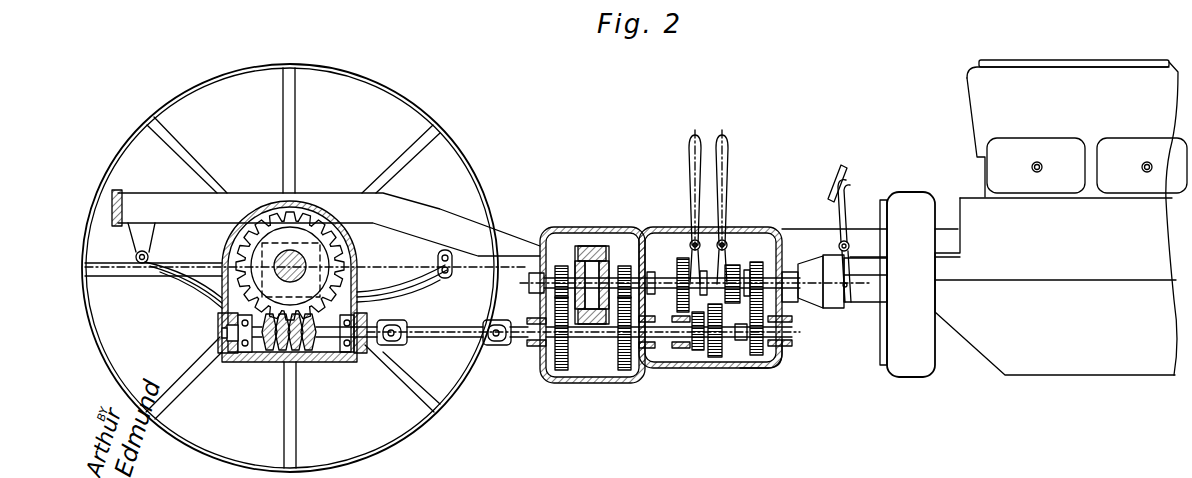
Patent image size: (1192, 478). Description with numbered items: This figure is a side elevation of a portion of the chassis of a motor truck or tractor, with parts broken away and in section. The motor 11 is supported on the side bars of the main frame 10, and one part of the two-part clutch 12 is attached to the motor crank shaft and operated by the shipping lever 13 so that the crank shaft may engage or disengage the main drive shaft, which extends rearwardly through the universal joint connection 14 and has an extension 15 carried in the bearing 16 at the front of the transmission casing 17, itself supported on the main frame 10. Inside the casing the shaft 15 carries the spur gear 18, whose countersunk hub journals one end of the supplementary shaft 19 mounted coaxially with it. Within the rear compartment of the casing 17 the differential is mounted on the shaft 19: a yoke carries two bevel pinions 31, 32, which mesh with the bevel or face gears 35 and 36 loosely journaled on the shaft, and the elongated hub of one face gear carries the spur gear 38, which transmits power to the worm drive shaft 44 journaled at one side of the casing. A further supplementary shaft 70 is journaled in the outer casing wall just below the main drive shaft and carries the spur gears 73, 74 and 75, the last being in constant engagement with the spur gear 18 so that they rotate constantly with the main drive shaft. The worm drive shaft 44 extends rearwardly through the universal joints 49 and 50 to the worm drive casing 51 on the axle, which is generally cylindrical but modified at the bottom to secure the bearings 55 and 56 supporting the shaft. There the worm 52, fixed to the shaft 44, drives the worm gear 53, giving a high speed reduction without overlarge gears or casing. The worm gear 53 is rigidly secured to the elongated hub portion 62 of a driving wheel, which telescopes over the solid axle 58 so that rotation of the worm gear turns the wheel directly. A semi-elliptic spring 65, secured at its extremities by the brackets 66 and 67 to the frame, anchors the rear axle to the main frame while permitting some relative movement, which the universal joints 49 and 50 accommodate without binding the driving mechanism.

The main frame 10 is at (115, 208).
The motor 11 is at (1005, 228).
The two-part clutch 12 is at (907, 284).
The shipping lever 13 is at (851, 183).
The universal joint connection 14 is at (836, 302).
The extension (main drive shaft) 15 is at (818, 296).
The bearing 16 is at (788, 300).
The transmission casing 17 is at (660, 230).
The spur gear 18 is at (758, 264).
The supplementary shaft 19 is at (670, 276).
The bevel pinion 31 is at (588, 249).
The bevel pinion 32 is at (600, 325).
The bevel or face gear 35 is at (566, 258).
The bevel or face gear 36 is at (612, 243).
The spur gear 38 is at (630, 263).
The worm drive shaft 44 is at (342, 343).
The universal joint 49 is at (402, 346).
The universal joint 50 is at (500, 347).
The worm drive casing 51 is at (223, 243).
The worm 52 is at (303, 353).
The worm gear 53 is at (297, 261).
The bearing 55 is at (247, 354).
The bearing 56 is at (366, 350).
The solid axle 58 is at (301, 209).
The elongated hub portion 62 is at (284, 254).
The semi-elliptic spring 65 is at (208, 301).
The bracket 66 is at (136, 236).
The bracket 67 is at (466, 262).
The supplementary shaft 70 is at (741, 340).
The spur gear 73 is at (699, 352).
The spur gear 74 is at (718, 358).
The spur gear 75 is at (777, 364).